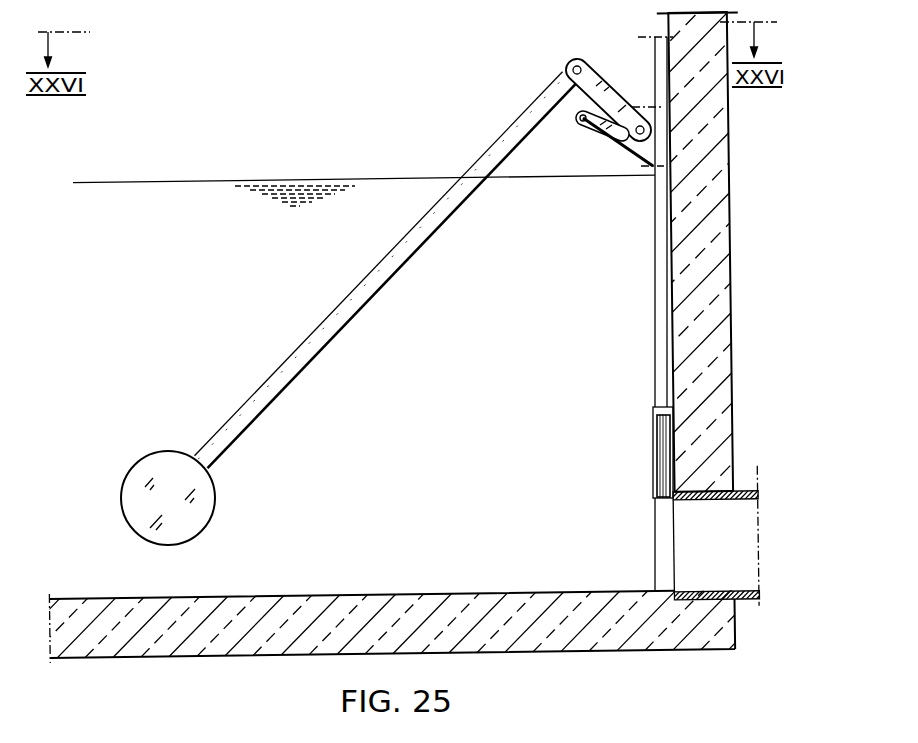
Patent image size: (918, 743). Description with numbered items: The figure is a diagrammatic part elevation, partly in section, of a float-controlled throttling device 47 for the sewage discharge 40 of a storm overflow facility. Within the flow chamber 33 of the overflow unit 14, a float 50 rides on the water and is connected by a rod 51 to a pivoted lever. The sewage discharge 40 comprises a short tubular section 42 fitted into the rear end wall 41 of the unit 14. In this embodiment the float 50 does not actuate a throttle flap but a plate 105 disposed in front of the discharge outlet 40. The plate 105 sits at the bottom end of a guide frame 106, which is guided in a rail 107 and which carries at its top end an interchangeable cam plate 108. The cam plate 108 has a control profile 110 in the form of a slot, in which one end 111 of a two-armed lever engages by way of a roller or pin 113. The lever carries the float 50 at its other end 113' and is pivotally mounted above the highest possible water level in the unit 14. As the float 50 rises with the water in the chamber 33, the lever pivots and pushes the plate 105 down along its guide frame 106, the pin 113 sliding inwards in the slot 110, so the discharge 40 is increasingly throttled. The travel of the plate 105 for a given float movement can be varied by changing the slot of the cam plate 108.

The overflow unit 14 is at (148, 662).
The flow chamber 33 is at (152, 328).
The sewage discharge 40 is at (673, 577).
The rear end wall 41 is at (717, 198).
The tubular section 42 is at (755, 601).
The throttling device 47 is at (387, 168).
The float 50 is at (193, 503).
The rod 51 is at (372, 282).
The plate 105 is at (666, 468).
The guide frame 106 is at (660, 308).
The rail 107 is at (655, 524).
The cam plate 108 is at (617, 142).
The control profile 110 is at (582, 123).
The one end of lever 111 is at (598, 88).
The roller or pin 113 is at (618, 164).
The other end of lever 113' is at (295, 382).